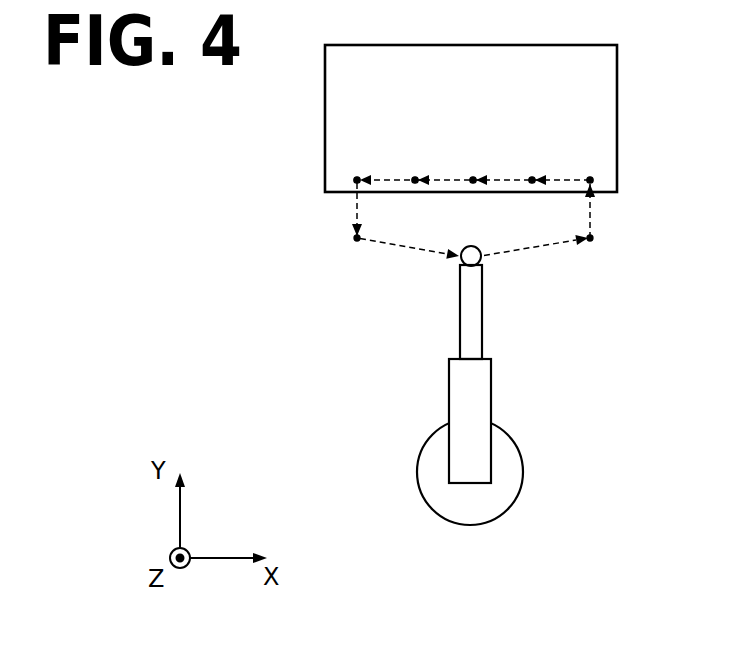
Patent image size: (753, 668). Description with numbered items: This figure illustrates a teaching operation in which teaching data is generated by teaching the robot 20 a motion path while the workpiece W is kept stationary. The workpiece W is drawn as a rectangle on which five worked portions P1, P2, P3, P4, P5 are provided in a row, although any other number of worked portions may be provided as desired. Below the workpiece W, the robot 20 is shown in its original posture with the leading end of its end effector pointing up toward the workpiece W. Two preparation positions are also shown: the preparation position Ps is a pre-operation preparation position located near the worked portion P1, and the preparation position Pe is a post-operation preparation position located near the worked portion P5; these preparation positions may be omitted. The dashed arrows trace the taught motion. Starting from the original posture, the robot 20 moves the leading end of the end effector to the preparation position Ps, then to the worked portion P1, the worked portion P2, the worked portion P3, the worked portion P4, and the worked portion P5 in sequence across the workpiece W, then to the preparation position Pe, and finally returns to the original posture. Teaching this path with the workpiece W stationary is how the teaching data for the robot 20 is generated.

The workpiece W is at (574, 45).
The worked portion P1 is at (590, 177).
The worked portion P2 is at (532, 177).
The worked portion P3 is at (473, 177).
The worked portion P4 is at (415, 177).
The worked portion P5 is at (357, 177).
The preparation position Pe is at (355, 240).
The preparation position Ps is at (604, 241).
The robot 20 is at (511, 433).